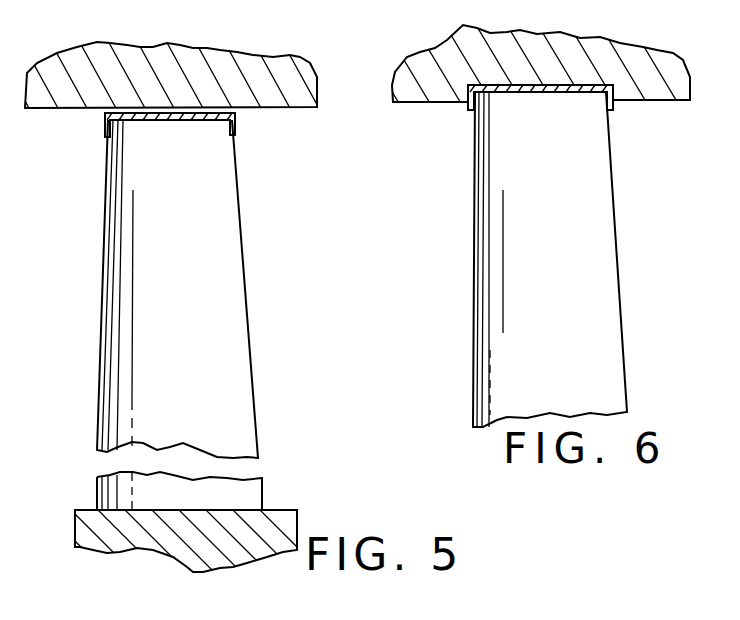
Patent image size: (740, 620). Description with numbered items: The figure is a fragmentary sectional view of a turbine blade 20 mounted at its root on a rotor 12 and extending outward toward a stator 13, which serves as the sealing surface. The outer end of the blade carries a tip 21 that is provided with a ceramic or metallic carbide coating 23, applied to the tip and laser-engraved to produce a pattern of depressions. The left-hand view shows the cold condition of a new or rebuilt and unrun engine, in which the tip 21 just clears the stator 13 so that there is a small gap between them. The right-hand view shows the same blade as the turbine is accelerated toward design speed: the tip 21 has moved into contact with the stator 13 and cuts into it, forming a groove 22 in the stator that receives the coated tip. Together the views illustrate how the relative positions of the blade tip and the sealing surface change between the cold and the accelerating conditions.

In FIG. 5, the rotor 12 is at (82, 527).
In FIG. 5, the stator 13 is at (250, 57).
In FIG. 6, the stator 13 is at (647, 47).
In FIG. 5, the turbine blade 20 is at (188, 249).
In FIG. 6, the turbine blade 20 is at (567, 247).
In FIG. 5, the tip 21 is at (159, 123).
In FIG. 6, the tip 21 is at (505, 96).
In FIG. 6, the groove 22 is at (560, 90).
In FIG. 5, the coating 23 is at (238, 121).
In FIG. 6, the coating 23 is at (613, 108).